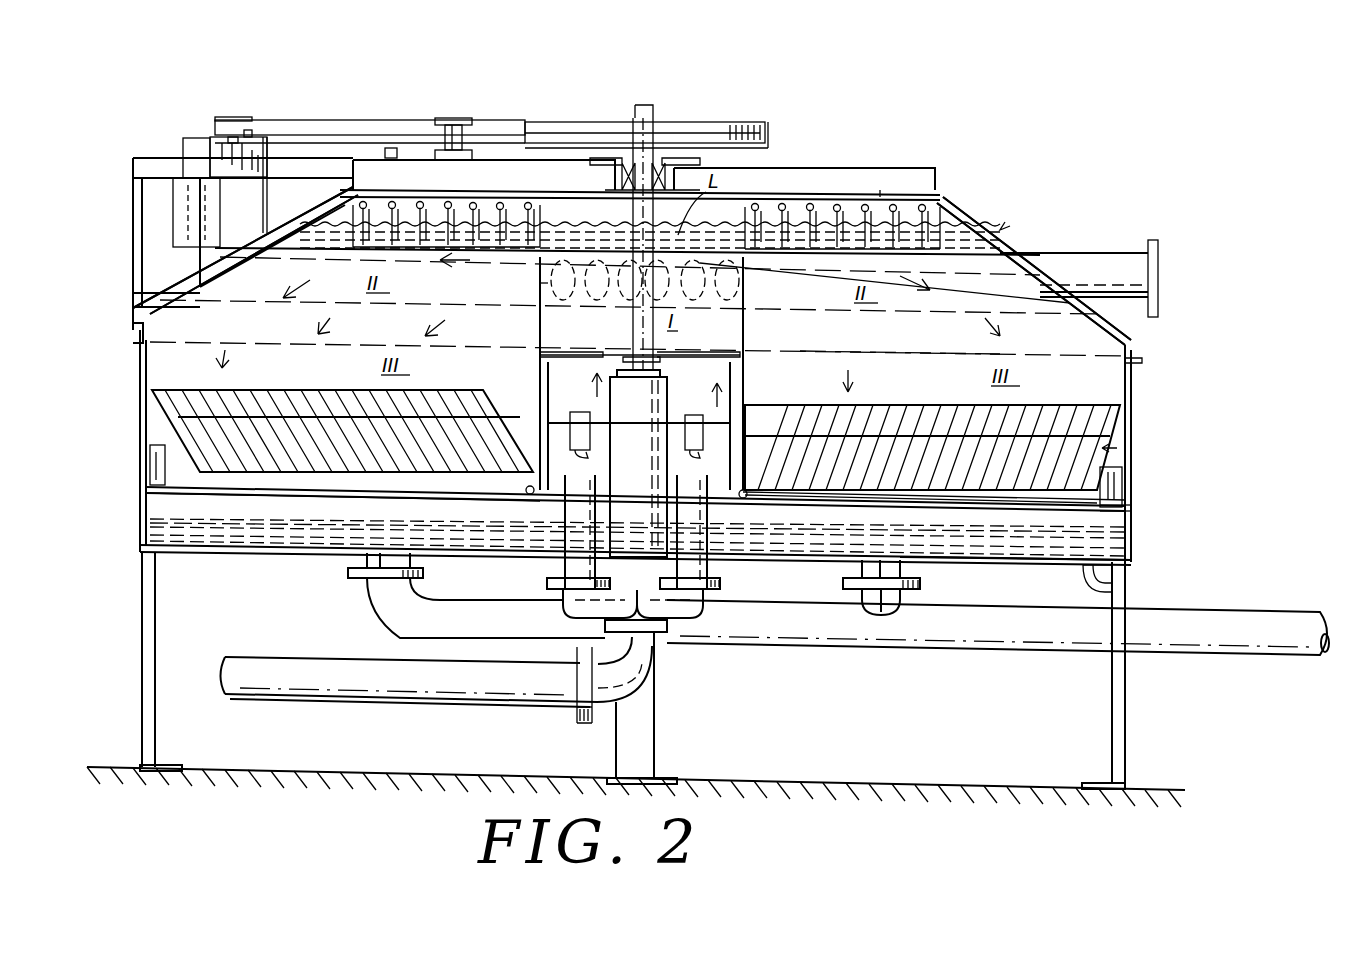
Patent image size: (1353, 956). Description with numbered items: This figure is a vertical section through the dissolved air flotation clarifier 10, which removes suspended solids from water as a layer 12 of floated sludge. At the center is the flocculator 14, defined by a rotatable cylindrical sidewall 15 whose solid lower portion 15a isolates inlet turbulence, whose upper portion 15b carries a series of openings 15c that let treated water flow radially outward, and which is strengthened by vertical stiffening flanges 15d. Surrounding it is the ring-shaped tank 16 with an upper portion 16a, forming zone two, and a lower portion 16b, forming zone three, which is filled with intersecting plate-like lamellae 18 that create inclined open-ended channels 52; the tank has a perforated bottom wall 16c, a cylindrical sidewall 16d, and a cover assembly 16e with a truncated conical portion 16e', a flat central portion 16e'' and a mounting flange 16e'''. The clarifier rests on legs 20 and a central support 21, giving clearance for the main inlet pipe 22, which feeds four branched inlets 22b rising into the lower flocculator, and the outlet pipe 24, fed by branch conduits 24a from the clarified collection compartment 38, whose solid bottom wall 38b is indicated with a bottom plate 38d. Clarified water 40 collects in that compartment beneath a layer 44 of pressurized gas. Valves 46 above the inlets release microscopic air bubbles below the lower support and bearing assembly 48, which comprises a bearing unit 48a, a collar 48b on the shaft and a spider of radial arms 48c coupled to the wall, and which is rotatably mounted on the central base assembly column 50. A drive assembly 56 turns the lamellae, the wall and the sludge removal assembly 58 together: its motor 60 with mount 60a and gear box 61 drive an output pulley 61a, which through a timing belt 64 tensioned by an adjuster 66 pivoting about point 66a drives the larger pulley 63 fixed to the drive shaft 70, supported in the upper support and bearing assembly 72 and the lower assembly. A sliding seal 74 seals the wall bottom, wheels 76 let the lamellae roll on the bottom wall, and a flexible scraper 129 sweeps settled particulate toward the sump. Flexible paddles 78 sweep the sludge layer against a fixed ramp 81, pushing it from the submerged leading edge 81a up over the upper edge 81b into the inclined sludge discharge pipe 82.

The clarifier 10 is at (918, 125).
The layer of floated sludge 12 is at (463, 210).
The central flocculator 14 is at (738, 283).
The rotatable cylindrical sidewall 15 is at (540, 318).
The flocculator sidewall lower portion 15a is at (740, 395).
The upper flocculator sidewall 15b is at (748, 335).
The openings 15c is at (540, 283).
The vertical stiffening flanges 15d is at (735, 378).
The tank 16 is at (1145, 348).
The upper tank portion 16a is at (935, 331).
The lower tank portion 16b is at (1131, 448).
The bottom wall 16c is at (1131, 520).
The cylindrical sidewall 16d is at (1135, 478).
The cover assembly 16e is at (1037, 261).
The truncated conical portion 16e' is at (1074, 258).
The flat central portion 16e'' is at (755, 163).
The mounting flange 16e''' is at (867, 153).
The lamellae 18 is at (1131, 390).
The legs 20 is at (160, 622).
The central support 21 is at (655, 702).
The main inlet pipe 22 is at (345, 657).
The branched inlets 22b is at (565, 512).
The outlet pipe 24 is at (1192, 607).
The branch conduits 24a is at (410, 567).
The clarified collection compartment 38 is at (128, 487).
The bottom wall of compartment 38b is at (1128, 588).
The bottom plate 38d is at (1135, 556).
The clarified water 40 is at (146, 528).
The layer of pressurized gas 44 is at (150, 507).
The valves 46 is at (580, 412).
The lower support and bearing assembly 48 is at (695, 352).
The bearing unit 48a is at (735, 358).
The collar 48b is at (590, 350).
The spider of radial arms 48c is at (540, 345).
The central base assembly column 50 is at (648, 455).
The channels 52 is at (340, 408).
The drive assembly 56 is at (170, 145).
The sludge removal assembly 58 is at (1010, 226).
The motor 60 is at (180, 132).
The motor mount 60a is at (238, 117).
The gear box 61 is at (262, 152).
The output pulley 61a is at (228, 117).
The pulley 63 is at (672, 120).
The timing belt 64 is at (343, 118).
The tension adjuster 66 is at (452, 118).
The pivot point 66a is at (392, 148).
The drive shaft 70 is at (640, 106).
The upper support and bearing assembly 72 is at (608, 155).
The sliding seal 74 is at (525, 490).
The wheels 76 is at (150, 462).
The flexible paddles 78 is at (338, 195).
The fixed ramp 81 is at (960, 215).
The leading lower edge 81a is at (945, 285).
The following upper edge 81b is at (870, 225).
The sludge discharge pipe 82 is at (1085, 260).
The flexible scraper 129 is at (940, 500).